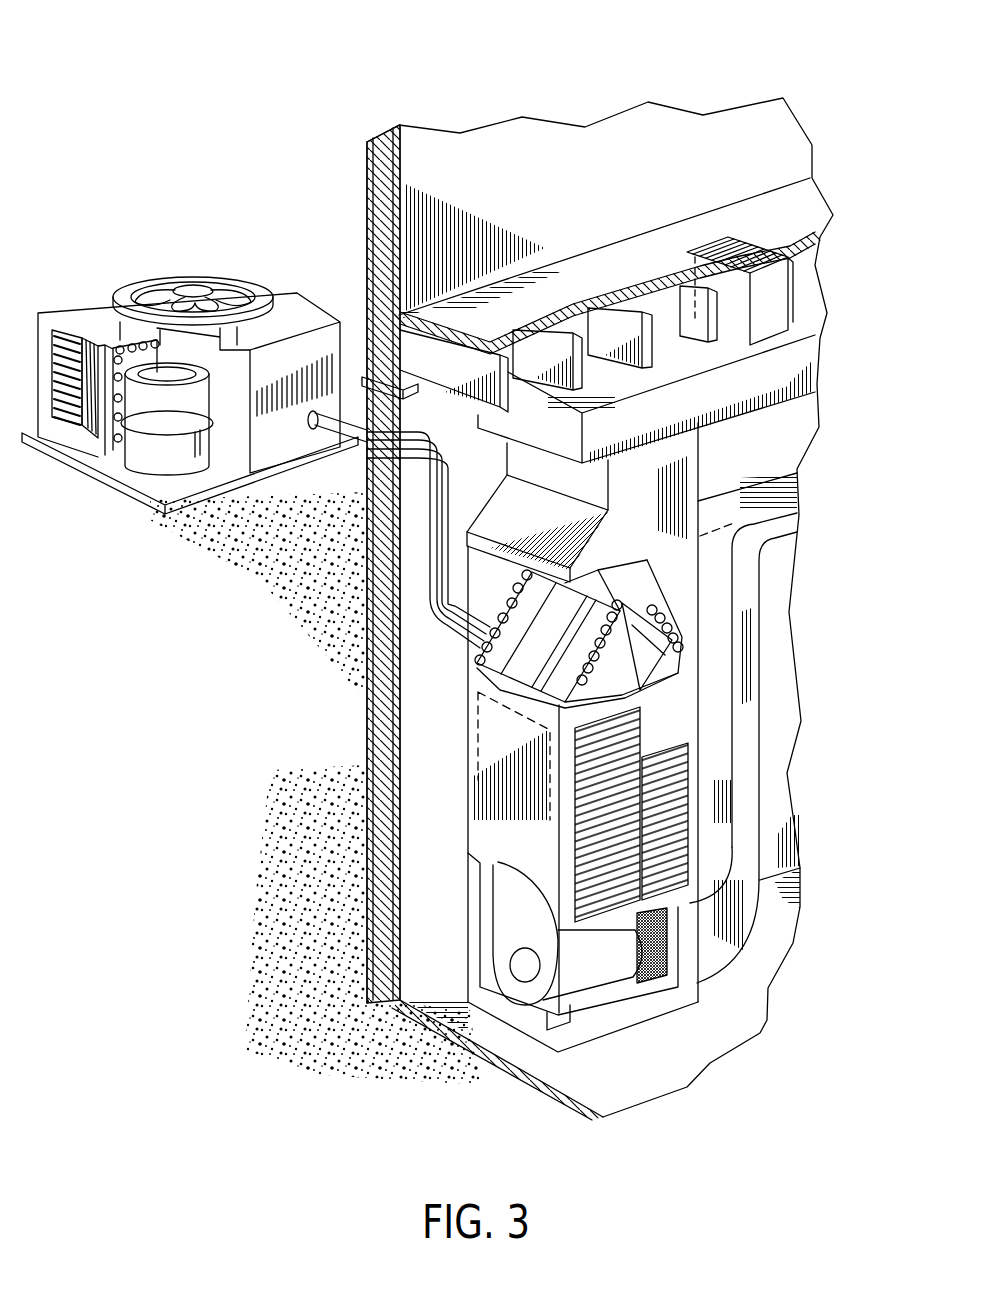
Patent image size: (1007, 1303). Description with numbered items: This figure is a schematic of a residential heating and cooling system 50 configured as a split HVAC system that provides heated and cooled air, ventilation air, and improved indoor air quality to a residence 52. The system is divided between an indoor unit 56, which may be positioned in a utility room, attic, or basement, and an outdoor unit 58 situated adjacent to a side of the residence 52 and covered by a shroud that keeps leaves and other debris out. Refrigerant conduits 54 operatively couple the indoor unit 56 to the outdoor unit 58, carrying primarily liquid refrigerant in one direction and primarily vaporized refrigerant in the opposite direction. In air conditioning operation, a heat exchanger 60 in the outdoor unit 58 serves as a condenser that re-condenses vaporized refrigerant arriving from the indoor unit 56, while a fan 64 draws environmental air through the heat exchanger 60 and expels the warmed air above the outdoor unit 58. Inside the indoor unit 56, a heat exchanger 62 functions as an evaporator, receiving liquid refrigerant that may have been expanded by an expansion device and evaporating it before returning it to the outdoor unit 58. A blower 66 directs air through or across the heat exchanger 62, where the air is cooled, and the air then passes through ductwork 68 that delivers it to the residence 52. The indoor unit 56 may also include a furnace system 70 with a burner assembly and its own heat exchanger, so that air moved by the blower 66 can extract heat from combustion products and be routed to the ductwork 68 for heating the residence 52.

The residential heating and cooling system 50 is at (188, 95).
The residence 52 is at (507, 148).
The refrigerant conduits 54 is at (437, 542).
The indoor unit 56 is at (445, 794).
The outdoor unit 58 is at (143, 258).
The heat exchanger 60 is at (118, 345).
The heat exchanger 62 is at (530, 660).
The fan 64 is at (213, 277).
The blower 66 is at (520, 990).
The ductwork 68 is at (745, 385).
The furnace system 70 is at (478, 742).